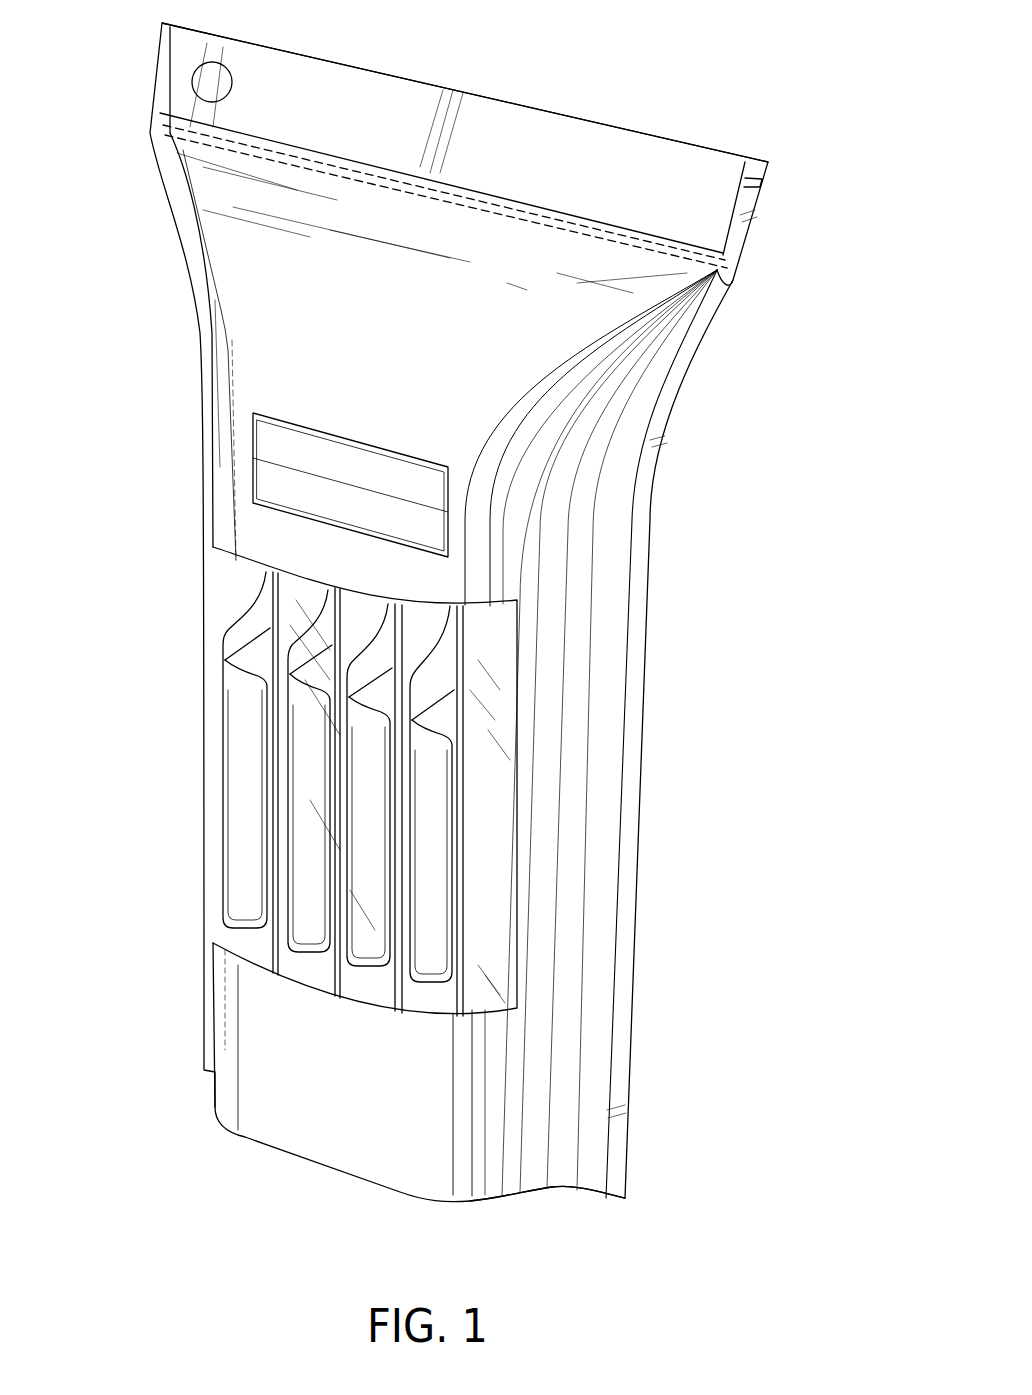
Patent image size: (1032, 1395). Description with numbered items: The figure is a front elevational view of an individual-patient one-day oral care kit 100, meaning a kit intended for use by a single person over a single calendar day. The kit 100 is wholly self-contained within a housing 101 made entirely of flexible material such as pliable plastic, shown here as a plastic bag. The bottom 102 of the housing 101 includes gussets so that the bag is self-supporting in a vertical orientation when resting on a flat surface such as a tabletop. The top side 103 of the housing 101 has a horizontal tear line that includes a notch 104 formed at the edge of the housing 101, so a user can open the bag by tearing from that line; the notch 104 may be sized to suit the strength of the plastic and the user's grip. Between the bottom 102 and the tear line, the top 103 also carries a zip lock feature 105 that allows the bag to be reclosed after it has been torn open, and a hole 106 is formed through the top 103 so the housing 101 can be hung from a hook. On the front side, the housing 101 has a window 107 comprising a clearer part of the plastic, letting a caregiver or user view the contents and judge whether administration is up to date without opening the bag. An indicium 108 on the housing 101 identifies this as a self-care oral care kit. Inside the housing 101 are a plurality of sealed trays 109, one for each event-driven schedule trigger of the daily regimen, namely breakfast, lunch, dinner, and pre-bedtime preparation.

The individual-patient one-day oral care kit 100 is at (432, 1258).
The housing 101 is at (625, 803).
The bottom 102 is at (540, 1190).
The top side 103 is at (403, 97).
The notch 104 is at (763, 184).
The zip lock feature 105 is at (733, 300).
The hole 106 is at (197, 77).
The window 107 is at (497, 664).
The indicium 108 is at (286, 424).
The sealed trays 109 is at (305, 713).